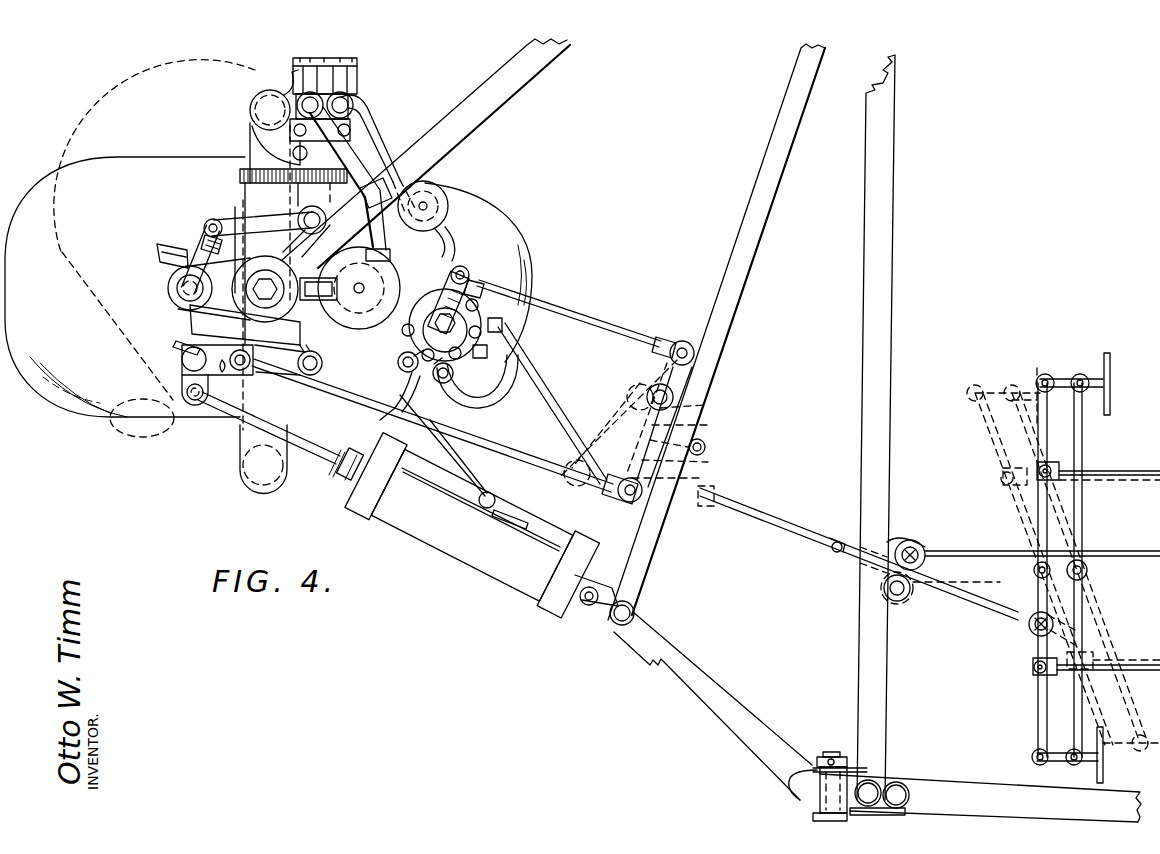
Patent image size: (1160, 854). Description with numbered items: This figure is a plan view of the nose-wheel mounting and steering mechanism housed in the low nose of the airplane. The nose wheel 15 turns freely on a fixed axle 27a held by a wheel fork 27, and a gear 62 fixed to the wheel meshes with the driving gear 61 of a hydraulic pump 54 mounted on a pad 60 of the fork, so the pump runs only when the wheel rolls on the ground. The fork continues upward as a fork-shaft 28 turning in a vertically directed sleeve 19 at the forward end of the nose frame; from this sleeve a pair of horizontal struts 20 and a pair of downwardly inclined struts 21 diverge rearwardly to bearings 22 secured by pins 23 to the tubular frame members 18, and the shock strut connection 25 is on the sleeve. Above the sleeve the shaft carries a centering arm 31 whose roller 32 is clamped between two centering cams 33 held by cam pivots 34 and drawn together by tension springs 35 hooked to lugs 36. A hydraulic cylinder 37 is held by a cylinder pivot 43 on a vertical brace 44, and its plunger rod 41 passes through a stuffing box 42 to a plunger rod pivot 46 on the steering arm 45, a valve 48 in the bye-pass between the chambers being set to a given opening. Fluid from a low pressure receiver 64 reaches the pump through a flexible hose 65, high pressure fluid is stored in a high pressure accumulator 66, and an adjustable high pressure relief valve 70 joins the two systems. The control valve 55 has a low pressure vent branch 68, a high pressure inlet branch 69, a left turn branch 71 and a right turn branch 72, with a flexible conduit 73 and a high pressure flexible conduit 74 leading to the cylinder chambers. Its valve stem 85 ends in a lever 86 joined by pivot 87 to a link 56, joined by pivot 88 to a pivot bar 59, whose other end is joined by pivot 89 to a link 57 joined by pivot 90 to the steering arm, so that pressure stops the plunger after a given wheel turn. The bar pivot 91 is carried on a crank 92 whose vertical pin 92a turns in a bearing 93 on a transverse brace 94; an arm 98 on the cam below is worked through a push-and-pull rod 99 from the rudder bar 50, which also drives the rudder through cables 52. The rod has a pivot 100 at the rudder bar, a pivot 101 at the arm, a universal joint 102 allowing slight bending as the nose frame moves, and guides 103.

The nose wheel 15 is at (130, 248).
The tubular frame members 18 is at (880, 771).
The vertically directed sleeve 19 is at (282, 264).
The rearwardly diverging struts 20 is at (470, 460).
The struts 21 is at (508, 95).
The bearings 22 is at (822, 792).
The pins 23 is at (837, 755).
The shock strut connection 25 is at (326, 270).
The wheel fork 27 is at (248, 108).
The fixed axle 27a is at (248, 140).
The fork-shaft 28 is at (300, 346).
The centering arm 31 is at (172, 298).
The roller 32 is at (168, 288).
The centering cams 33 is at (256, 275).
The cam pivot 34 is at (322, 214).
The tension springs 35 is at (222, 222).
The lugs 36 is at (204, 226).
The hydraulic cylinder 37 is at (472, 525).
The plunger rod 41 is at (330, 450).
The stuffing box 42 is at (349, 448).
The cylinder pivot 43 is at (588, 612).
The vertical brace 44 is at (636, 612).
The steering arm 45 is at (180, 360).
The plunger rod pivot 46 is at (192, 405).
The valve 48 is at (478, 503).
The rudder bar 50 is at (1088, 369).
The cables 52 is at (1136, 476).
The hydraulic pump 54 is at (338, 72).
The control valve 55 is at (472, 301).
The link 56 is at (597, 322).
The link 57 is at (524, 448).
The pivot bar 59 is at (690, 392).
The pad 60 is at (378, 128).
The driving gear 61 is at (385, 146).
The gear 62 is at (238, 177).
The low pressure receiver 64 is at (345, 345).
The hose 65 is at (288, 88).
The high pressure accumulator 66 is at (450, 213).
The low pressure vent branch 68 is at (359, 300).
The high pressure inlet branch 69 is at (364, 288).
The adjustable high pressure relief valve 70 is at (372, 227).
The left turn branch 71 is at (477, 376).
The right turn branch 72 is at (504, 327).
The flexible conduit 73 is at (540, 384).
The high pressure flexible conduit 74 is at (507, 404).
The valve stem 85 is at (402, 332).
The lever 86 is at (466, 266).
The pivot 87 is at (472, 275).
The pivot 88 is at (686, 345).
The pivot 89 is at (630, 503).
The pivot 90 is at (236, 384).
The bar pivot 91 is at (705, 406).
The crank 92 is at (708, 426).
The vertical pin 92a is at (706, 447).
The bearing 93 is at (708, 463).
The transverse brace 94 is at (725, 318).
The arm 98 is at (671, 475).
The push-and-pull rod 99 is at (800, 525).
The pivot 100 is at (1030, 628).
The pivot 101 is at (690, 506).
The universal joint 102 is at (835, 555).
The guides 103 is at (922, 551).